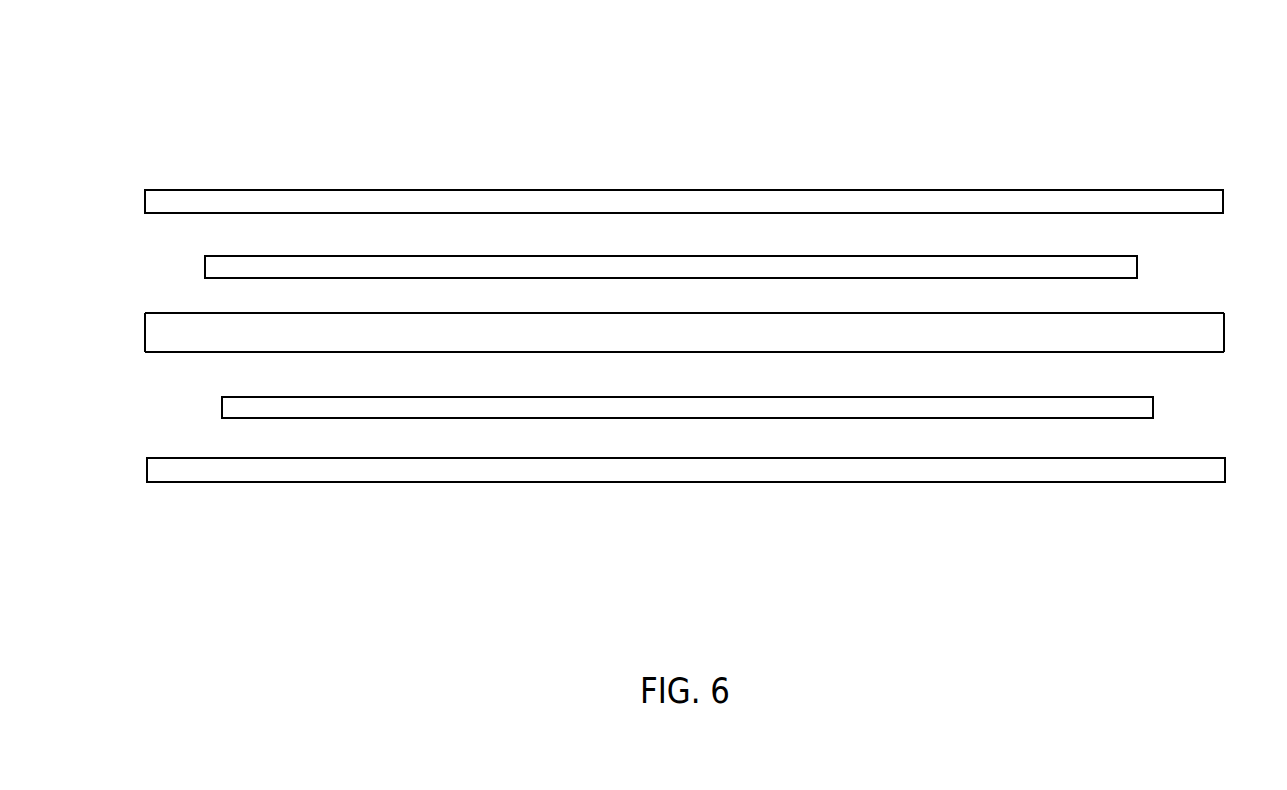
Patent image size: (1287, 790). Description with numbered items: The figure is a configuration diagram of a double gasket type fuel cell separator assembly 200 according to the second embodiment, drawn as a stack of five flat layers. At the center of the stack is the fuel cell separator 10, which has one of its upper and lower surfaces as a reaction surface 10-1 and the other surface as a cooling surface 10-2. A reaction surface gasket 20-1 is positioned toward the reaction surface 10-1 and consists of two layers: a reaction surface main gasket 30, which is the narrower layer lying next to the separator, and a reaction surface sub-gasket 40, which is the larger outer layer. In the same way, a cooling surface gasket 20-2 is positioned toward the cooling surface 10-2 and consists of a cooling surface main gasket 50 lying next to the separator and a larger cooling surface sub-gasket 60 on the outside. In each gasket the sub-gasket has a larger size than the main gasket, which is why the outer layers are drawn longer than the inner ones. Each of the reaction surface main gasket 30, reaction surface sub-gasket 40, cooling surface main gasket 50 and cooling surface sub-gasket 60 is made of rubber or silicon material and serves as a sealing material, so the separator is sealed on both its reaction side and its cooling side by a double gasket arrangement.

The fuel cell separator assembly 200 is at (477, 160).
The reaction surface gasket 20-1 is at (805, 83).
The reaction surface sub-gasket 40 is at (683, 190).
The reaction surface main gasket 30 is at (788, 256).
The fuel cell separator 10 is at (1210, 327).
The reaction surface 10-1 is at (1180, 311).
The cooling surface 10-2 is at (1185, 353).
The cooling surface gasket 20-2 is at (698, 590).
The cooling surface main gasket 50 is at (590, 418).
The cooling surface sub-gasket 60 is at (697, 482).